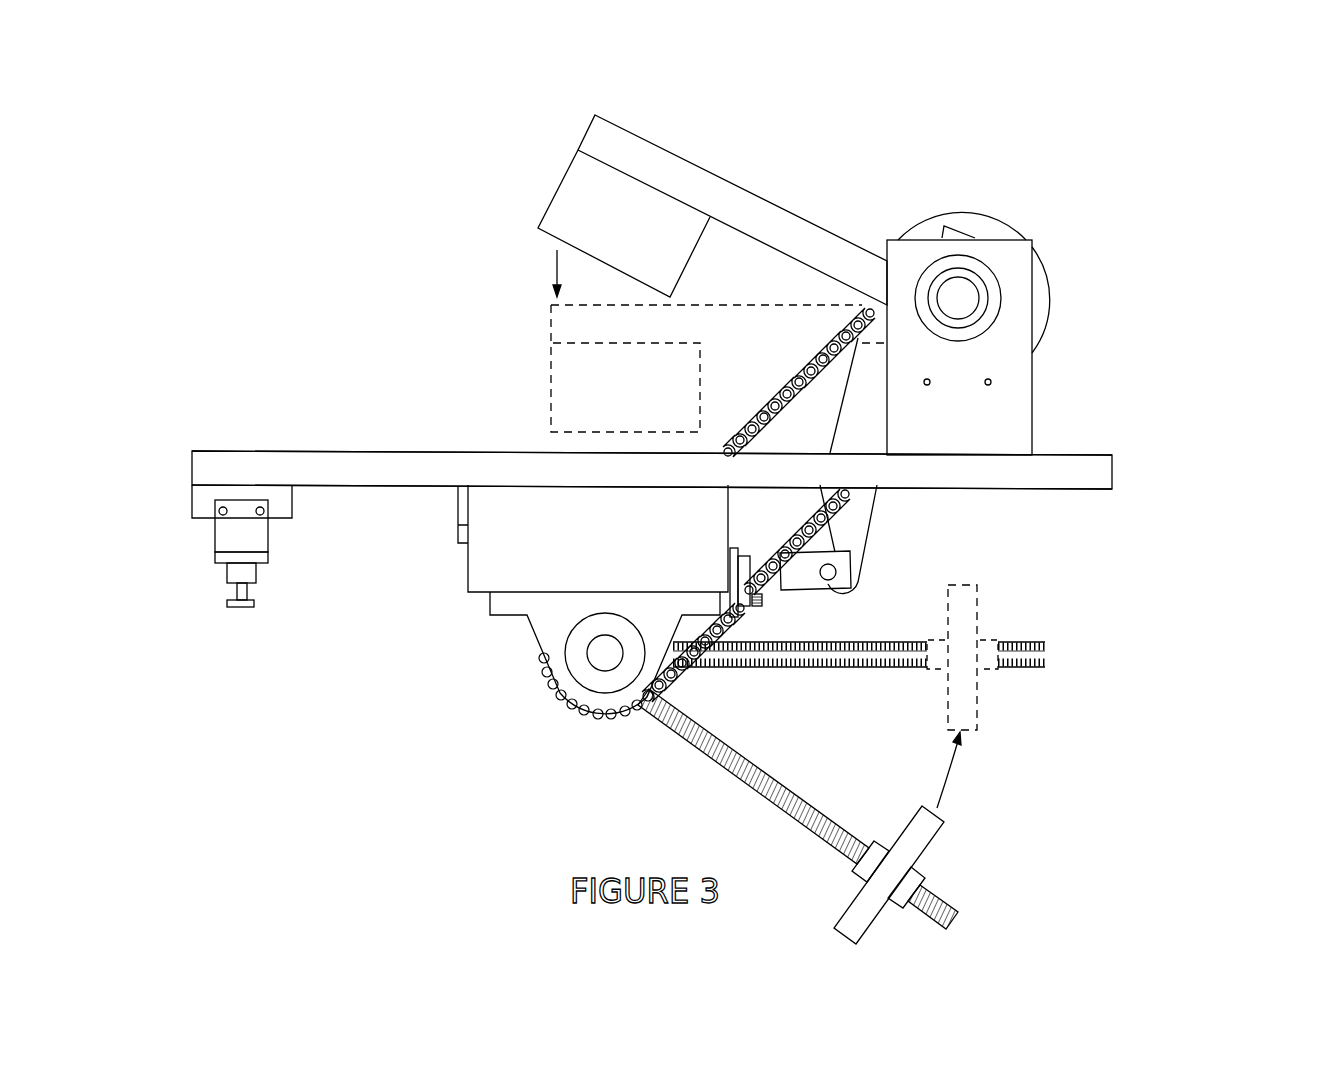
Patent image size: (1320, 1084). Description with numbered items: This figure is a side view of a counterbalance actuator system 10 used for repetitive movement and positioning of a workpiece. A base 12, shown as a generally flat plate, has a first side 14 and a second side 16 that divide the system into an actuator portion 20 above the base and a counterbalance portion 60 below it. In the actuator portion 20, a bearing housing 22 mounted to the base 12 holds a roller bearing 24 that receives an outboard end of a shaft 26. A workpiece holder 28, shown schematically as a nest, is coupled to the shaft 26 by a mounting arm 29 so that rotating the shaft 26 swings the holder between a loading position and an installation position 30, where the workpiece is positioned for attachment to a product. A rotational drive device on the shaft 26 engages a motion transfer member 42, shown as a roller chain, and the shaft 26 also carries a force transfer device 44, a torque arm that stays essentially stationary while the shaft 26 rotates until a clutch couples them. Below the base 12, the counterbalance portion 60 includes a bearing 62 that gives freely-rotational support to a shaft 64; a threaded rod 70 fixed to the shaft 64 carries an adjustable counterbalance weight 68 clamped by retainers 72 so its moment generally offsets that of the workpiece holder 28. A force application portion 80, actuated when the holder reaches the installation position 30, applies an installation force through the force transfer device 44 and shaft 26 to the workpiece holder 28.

The counterbalance actuator system 10 is at (1200, 130).
The base 12 is at (1095, 476).
The first side 14 is at (226, 532).
The second side 16 is at (1100, 455).
The actuator portion 20 is at (942, 158).
The bearing housing 22 is at (1010, 430).
The roller bearing 24 is at (985, 325).
The shaft 26 is at (965, 303).
The workpiece holder 28 is at (577, 190).
The mounting arm 29 is at (712, 190).
The installation position 30 is at (503, 383).
The motion transfer member 42 is at (783, 392).
The force transfer device 44 is at (852, 405).
The counterbalance portion 60 is at (1100, 730).
The bearing 62 is at (552, 632).
The shaft 64 is at (603, 652).
The adjustable counterbalance weight 68 is at (928, 847).
The rod 70 is at (726, 758).
The retainer 72 is at (862, 880).
The force application portion 80 is at (885, 572).